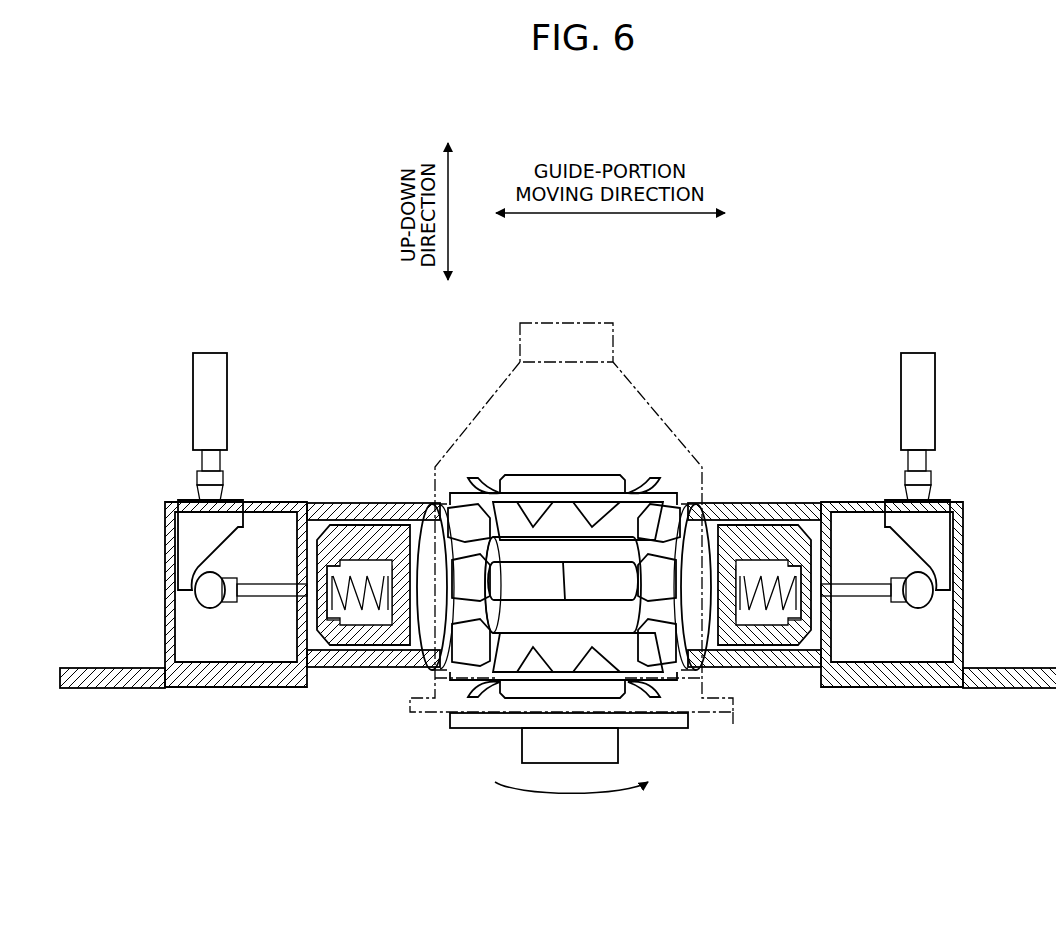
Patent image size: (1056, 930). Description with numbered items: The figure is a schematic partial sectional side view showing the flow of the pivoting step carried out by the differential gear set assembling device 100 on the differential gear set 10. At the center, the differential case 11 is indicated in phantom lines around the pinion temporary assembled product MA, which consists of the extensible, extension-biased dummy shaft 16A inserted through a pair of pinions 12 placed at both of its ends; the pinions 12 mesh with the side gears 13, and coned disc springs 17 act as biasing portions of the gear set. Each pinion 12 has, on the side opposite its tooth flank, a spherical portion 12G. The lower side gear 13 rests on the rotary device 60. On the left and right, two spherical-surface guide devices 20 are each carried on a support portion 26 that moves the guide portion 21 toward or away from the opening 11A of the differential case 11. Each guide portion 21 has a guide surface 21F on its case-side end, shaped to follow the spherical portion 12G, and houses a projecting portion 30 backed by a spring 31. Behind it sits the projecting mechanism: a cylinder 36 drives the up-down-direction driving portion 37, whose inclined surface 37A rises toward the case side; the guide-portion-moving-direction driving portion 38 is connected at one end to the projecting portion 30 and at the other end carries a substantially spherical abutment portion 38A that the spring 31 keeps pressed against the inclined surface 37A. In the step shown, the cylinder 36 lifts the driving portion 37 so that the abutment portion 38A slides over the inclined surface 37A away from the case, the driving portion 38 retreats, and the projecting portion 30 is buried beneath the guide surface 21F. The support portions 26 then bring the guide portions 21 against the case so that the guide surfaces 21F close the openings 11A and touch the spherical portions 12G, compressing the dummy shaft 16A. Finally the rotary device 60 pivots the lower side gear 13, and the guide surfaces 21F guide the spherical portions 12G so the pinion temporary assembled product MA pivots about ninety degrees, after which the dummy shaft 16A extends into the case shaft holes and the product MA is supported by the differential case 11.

The differential gear set assembling device 100 is at (558, 485).
The differential gear set 10 is at (564, 526).
The differential case 11 is at (613, 323).
The opening 11A is at (405, 668).
The pinion 12 is at (436, 505).
The spherical portion 12G is at (400, 652).
The side gear 13 is at (537, 490).
The dummy shaft 16A is at (573, 570).
The coned disc spring 17 is at (653, 485).
The pinion temporary assembled product MA is at (548, 553).
The spherical-surface guide device 20 is at (558, 553).
The guide portion 21 is at (381, 506).
The guide surface 21F is at (347, 660).
The support portion 26 is at (262, 696).
The projecting portion 30 is at (352, 540).
The spring 31 is at (318, 668).
The cylinder 36 is at (195, 392).
The up-down-direction driving portion 37 is at (180, 553).
The inclined surface 37A is at (232, 543).
The guide-portion-moving-direction driving portion 38 is at (275, 597).
The abutment portion 38A is at (212, 604).
The rotary device 60 is at (452, 724).